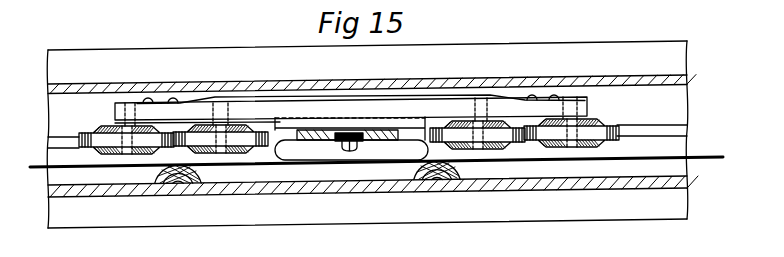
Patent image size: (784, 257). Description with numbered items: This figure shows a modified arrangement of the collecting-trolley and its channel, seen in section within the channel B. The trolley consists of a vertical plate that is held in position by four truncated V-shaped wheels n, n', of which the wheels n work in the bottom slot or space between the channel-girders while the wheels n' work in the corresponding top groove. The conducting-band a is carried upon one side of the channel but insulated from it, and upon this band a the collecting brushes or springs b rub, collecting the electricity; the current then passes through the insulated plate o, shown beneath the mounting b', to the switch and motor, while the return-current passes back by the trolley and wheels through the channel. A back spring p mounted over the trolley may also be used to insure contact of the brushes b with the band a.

The tube casing B is at (687, 72).
The conducting-band a is at (375, 162).
The back spring p is at (247, 98).
The truncated V-shaped wheels n is at (349, 143).
The truncated V-shaped wheels n' is at (349, 143).
The collecting brushes or springs b is at (351, 150).
The hatched plate b' is at (379, 80).
The insulated plate o is at (352, 133).